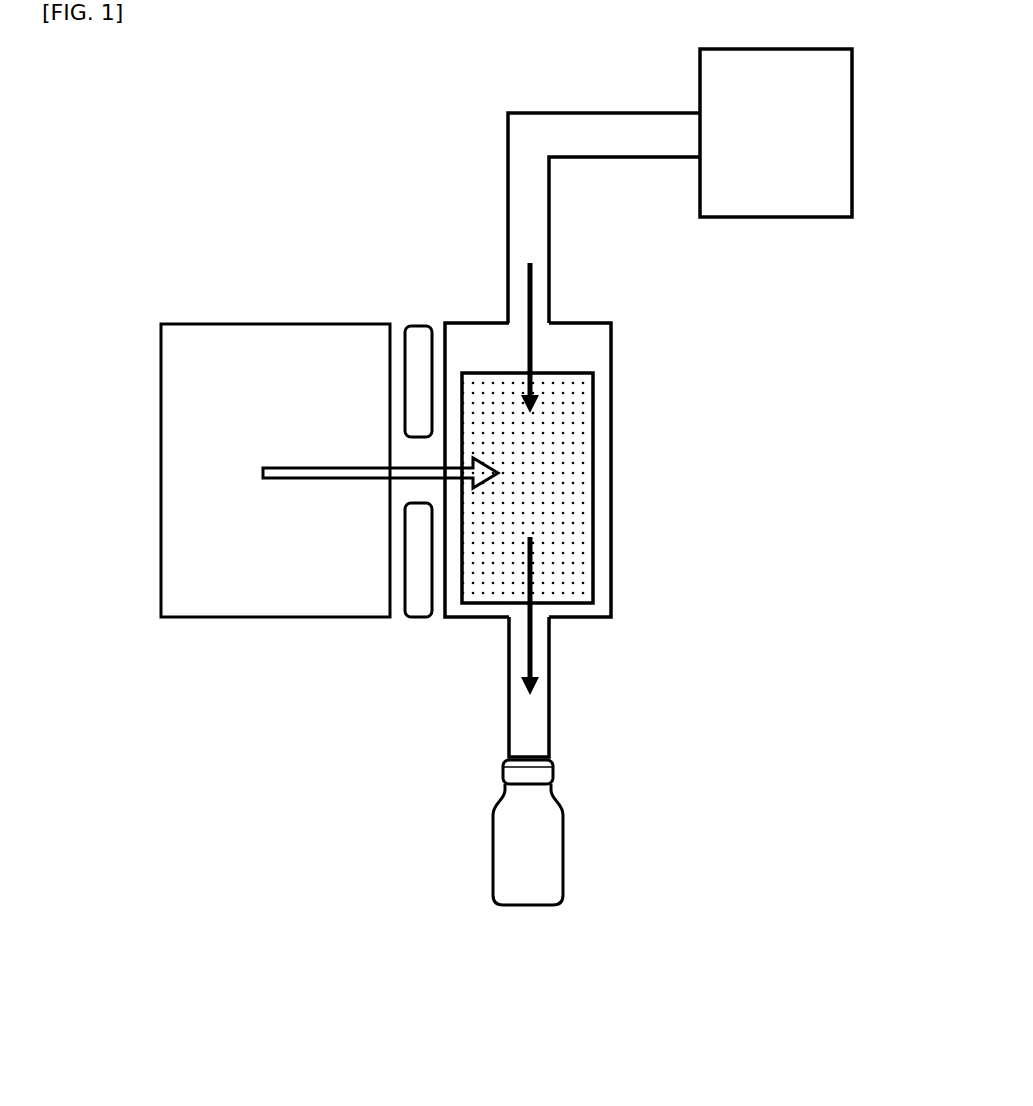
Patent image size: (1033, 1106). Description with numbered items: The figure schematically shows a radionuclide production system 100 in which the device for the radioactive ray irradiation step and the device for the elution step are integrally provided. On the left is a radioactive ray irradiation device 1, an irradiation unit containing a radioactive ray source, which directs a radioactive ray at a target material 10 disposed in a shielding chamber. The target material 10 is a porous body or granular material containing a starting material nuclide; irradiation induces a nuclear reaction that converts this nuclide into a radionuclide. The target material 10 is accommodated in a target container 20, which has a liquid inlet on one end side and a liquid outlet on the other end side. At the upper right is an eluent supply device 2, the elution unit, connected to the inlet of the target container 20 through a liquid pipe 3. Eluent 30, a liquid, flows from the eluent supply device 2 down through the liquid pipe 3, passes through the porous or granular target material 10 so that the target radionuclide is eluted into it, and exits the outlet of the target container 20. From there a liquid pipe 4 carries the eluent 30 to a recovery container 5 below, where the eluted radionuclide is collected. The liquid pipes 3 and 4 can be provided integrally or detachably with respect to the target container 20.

The radionuclide production system 100 is at (758, 623).
The radioactive ray irradiation device 1 is at (273, 322).
The eluent supply device 2 is at (780, 218).
The liquid pipe 3 is at (610, 158).
The liquid pipe 4 is at (549, 720).
The recovery container 5 is at (563, 840).
The target material 10 is at (572, 443).
The target container 20 is at (611, 548).
The eluent 30 is at (530, 291).